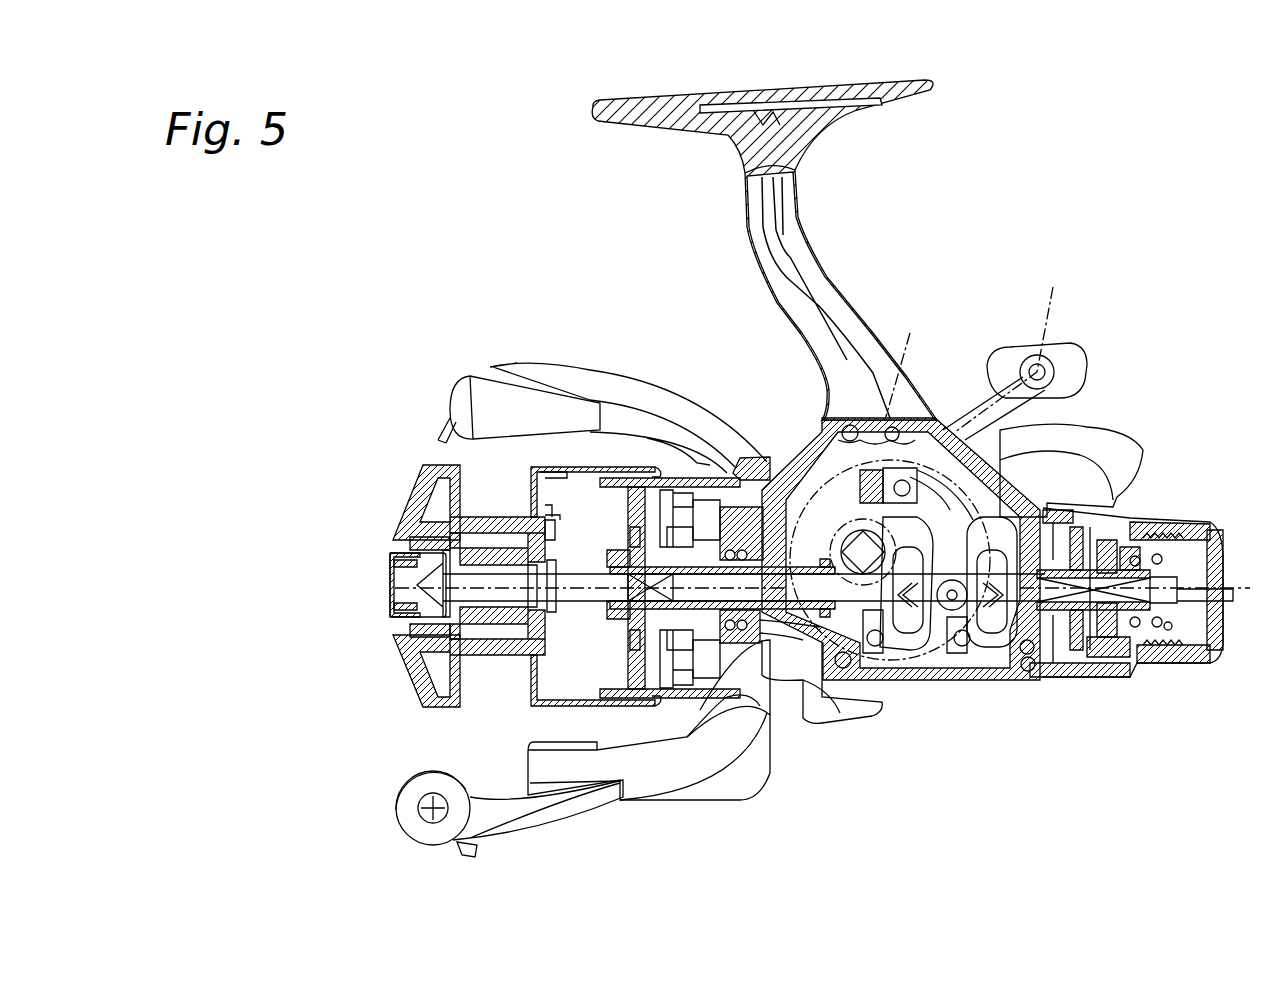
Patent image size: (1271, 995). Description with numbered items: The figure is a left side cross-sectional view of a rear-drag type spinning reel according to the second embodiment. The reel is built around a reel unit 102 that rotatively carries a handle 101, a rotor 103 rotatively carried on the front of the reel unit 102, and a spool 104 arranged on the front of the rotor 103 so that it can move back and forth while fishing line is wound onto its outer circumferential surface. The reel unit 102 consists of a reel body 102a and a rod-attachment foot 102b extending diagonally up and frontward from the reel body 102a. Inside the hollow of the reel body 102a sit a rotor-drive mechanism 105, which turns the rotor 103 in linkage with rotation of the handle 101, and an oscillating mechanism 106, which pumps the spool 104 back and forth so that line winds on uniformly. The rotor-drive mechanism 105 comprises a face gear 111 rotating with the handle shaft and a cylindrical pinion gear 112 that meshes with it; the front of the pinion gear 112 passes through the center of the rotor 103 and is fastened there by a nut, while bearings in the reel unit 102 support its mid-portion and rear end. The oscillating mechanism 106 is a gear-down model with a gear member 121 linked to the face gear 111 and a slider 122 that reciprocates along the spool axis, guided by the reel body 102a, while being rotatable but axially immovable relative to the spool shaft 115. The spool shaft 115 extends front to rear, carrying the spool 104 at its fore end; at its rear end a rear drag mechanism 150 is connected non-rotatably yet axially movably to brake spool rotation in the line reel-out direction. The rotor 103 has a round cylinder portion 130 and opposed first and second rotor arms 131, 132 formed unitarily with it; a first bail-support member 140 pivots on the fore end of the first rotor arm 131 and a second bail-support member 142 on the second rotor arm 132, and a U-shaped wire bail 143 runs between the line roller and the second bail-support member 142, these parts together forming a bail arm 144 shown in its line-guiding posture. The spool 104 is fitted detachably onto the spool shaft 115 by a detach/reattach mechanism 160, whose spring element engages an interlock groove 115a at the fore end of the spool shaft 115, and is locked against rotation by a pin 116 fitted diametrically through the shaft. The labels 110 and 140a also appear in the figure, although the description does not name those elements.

The handle 101 is at (1048, 350).
The reel unit 102 is at (956, 405).
The reel body 102a is at (1120, 437).
The rod-attachment foot 102b is at (800, 253).
The rotor 103 is at (675, 372).
The spool 104 is at (497, 507).
The rotor-drive mechanism 105 is at (818, 504).
The oscillating mechanism 106 is at (927, 667).
The master gear 110 is at (941, 537).
The face gear 111 is at (912, 359).
The pinion gear 112 is at (780, 578).
The spool shaft 115 is at (735, 497).
The interlock groove 115a is at (400, 590).
The pin 116 is at (552, 567).
The gear member 121 is at (1016, 343).
The slider 122 is at (973, 677).
The round cylinder portion 130 is at (640, 465).
The first rotor arm 131 is at (660, 770).
The second rotor arm 132 is at (605, 400).
The first bail-support member 140 is at (500, 818).
The spool hub portion 140a is at (548, 612).
The second bail-support member 142 is at (523, 400).
The bail 143 is at (442, 438).
The bail arm 144 is at (419, 456).
The rear drag mechanism 150 is at (1184, 484).
The detach/reattach mechanism 160 is at (386, 622).